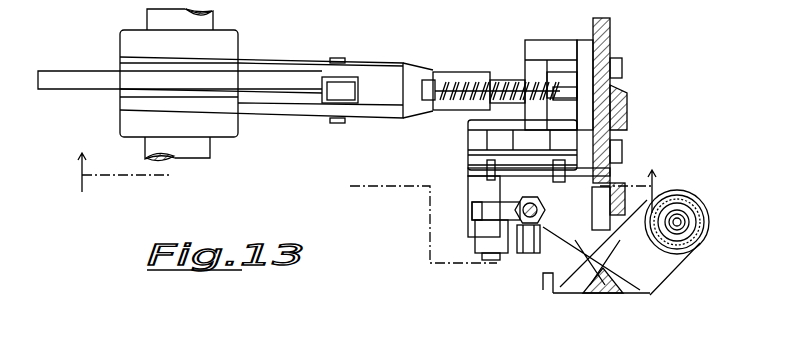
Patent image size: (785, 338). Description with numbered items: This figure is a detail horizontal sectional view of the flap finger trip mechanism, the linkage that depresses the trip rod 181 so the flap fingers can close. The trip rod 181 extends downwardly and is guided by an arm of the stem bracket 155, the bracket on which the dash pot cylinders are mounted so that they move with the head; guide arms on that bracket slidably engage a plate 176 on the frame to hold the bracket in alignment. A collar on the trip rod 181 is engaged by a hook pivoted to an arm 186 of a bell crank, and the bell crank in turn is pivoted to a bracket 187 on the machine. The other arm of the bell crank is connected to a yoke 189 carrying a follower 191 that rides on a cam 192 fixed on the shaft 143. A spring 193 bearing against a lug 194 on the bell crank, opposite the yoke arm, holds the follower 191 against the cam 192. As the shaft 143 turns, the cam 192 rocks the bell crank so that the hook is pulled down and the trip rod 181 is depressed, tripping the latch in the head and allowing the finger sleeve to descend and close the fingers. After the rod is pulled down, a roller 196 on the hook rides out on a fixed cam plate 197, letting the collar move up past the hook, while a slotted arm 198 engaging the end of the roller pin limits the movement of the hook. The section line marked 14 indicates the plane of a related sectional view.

The section line 14- 14 is at (366, 183).
The shaft 143 is at (206, 150).
The stem bracket 155 is at (665, 268).
The plate 176 is at (622, 178).
The trip rod 181 is at (528, 222).
The arm 186 is at (520, 127).
The bracket 187 is at (592, 50).
The yoke 189 is at (310, 56).
The follower 191 is at (342, 88).
The cam 192 is at (74, 91).
The spring 193 is at (463, 82).
The lug 194 is at (567, 78).
The roller 196 is at (490, 238).
The fixed cam plate 197 is at (530, 243).
The slotted arm 198 is at (510, 168).